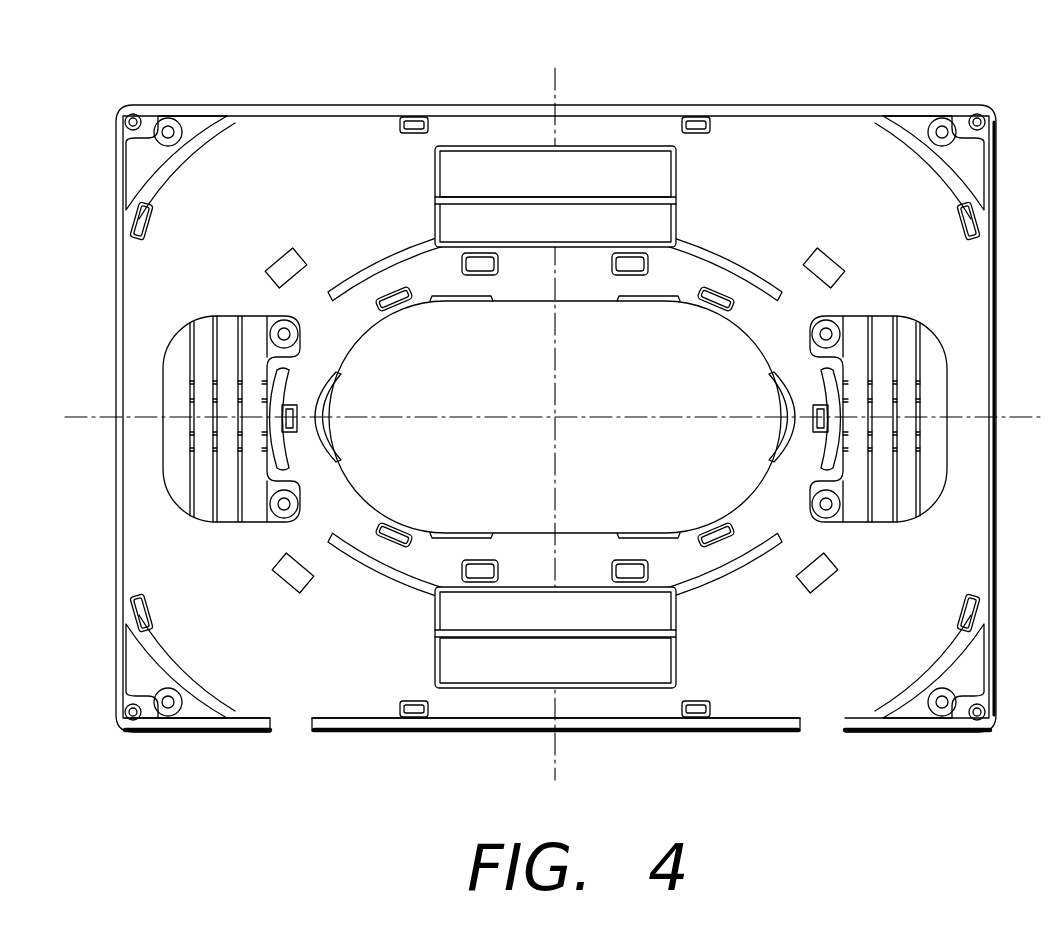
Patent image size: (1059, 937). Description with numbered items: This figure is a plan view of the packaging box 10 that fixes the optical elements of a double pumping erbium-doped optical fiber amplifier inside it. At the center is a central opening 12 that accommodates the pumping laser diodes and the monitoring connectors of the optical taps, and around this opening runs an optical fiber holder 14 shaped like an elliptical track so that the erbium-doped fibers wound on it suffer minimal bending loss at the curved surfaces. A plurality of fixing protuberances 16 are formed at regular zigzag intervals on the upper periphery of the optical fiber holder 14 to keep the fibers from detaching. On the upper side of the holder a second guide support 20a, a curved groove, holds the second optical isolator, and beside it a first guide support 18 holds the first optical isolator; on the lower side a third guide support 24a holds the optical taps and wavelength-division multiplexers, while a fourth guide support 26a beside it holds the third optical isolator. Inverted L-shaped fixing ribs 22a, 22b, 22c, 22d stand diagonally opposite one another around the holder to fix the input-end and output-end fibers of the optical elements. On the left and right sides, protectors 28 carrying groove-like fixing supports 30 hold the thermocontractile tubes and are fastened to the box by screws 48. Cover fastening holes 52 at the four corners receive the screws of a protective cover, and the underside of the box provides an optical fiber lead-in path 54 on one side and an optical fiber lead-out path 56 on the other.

The packaging box 10 is at (68, 90).
The central opening 12 is at (662, 391).
The optical fiber holder 14 is at (348, 297).
The fixing protuberances 16 is at (462, 263).
The first guide support 18 is at (613, 160).
The second guide support 20a is at (660, 223).
The inverted L-shaped fixing rib 22a is at (828, 263).
The inverted L-shaped fixing rib 22b is at (282, 263).
The inverted L-shaped fixing rib 22c is at (286, 580).
The inverted L-shaped fixing rib 22d is at (828, 578).
The third guide support 24a is at (657, 610).
The fourth guide support 26a is at (630, 673).
The protector 28 is at (158, 368).
The fixing supports 30 is at (905, 325).
The screws 48 is at (299, 333).
The cover fastening holes 52 is at (981, 114).
The optical fiber lead-in path 54 is at (820, 727).
The optical fiber lead-out path 56 is at (294, 727).